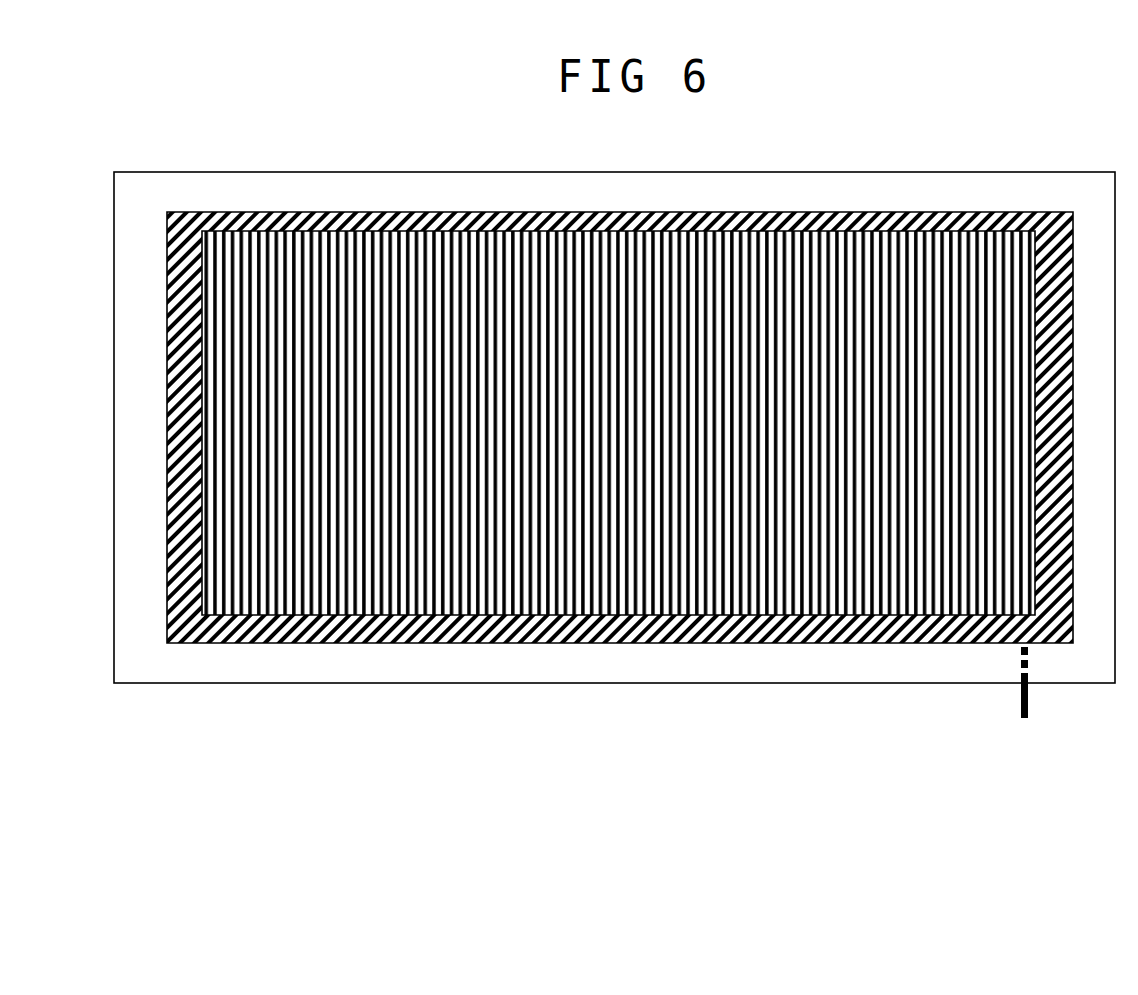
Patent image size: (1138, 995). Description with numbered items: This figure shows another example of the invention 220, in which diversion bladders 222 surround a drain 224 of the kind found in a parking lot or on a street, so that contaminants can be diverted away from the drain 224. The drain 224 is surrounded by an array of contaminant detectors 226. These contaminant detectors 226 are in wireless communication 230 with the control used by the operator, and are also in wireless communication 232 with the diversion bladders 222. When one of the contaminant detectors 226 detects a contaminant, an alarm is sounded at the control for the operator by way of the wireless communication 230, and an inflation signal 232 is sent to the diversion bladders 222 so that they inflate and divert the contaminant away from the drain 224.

The invention 220 is at (614, 455).
The diversion bladders 222 is at (513, 643).
The drain 224 is at (225, 263).
The array of contaminant detectors 226 is at (767, 692).
The wireless communication 230 is at (1015, 718).
The wireless communication / inflation signal 232 is at (1015, 663).